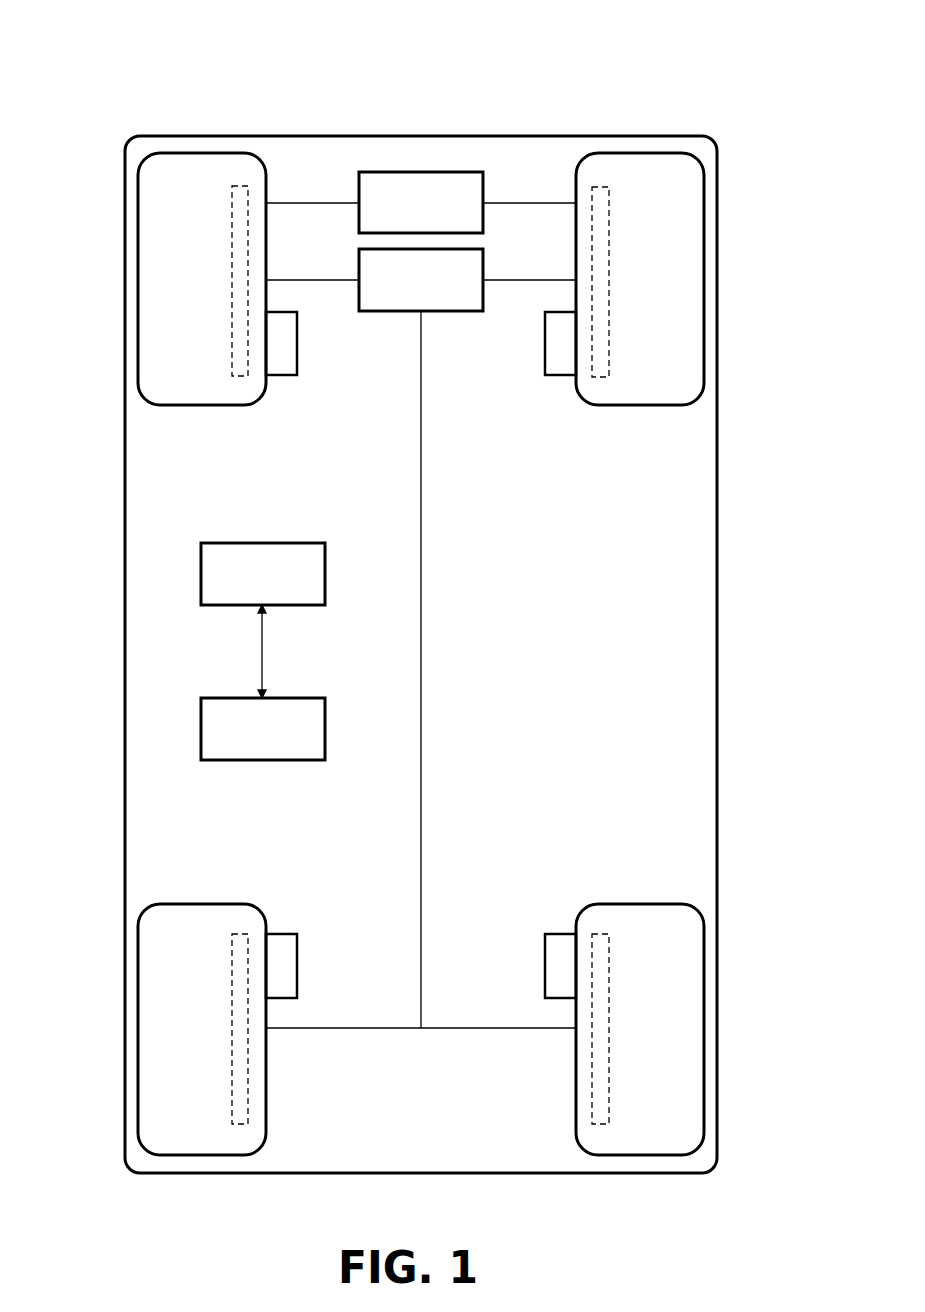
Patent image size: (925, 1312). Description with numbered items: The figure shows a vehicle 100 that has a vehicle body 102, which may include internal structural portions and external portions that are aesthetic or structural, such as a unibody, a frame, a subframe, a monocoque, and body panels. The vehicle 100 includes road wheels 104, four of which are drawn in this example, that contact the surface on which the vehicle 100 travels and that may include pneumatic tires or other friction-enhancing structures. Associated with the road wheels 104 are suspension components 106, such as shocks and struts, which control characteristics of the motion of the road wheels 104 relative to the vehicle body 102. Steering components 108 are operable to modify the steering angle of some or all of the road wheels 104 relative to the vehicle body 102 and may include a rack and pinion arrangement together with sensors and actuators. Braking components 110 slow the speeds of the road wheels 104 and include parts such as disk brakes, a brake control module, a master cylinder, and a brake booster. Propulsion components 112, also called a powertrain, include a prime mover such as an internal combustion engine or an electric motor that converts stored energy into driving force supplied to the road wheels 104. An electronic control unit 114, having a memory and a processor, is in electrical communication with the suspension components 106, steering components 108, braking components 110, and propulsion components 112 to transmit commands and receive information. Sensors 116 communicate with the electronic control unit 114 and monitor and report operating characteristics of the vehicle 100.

The vehicle 100 is at (90, 90).
The vehicle body 102 is at (673, 136).
The road wheels 104 is at (138, 210).
The suspension components 106 is at (280, 376).
The steering components 108 is at (421, 202).
The braking components 110 is at (232, 315).
The propulsion components 112 is at (421, 280).
The electronic control unit 114 is at (263, 574).
The sensors 116 is at (263, 729).